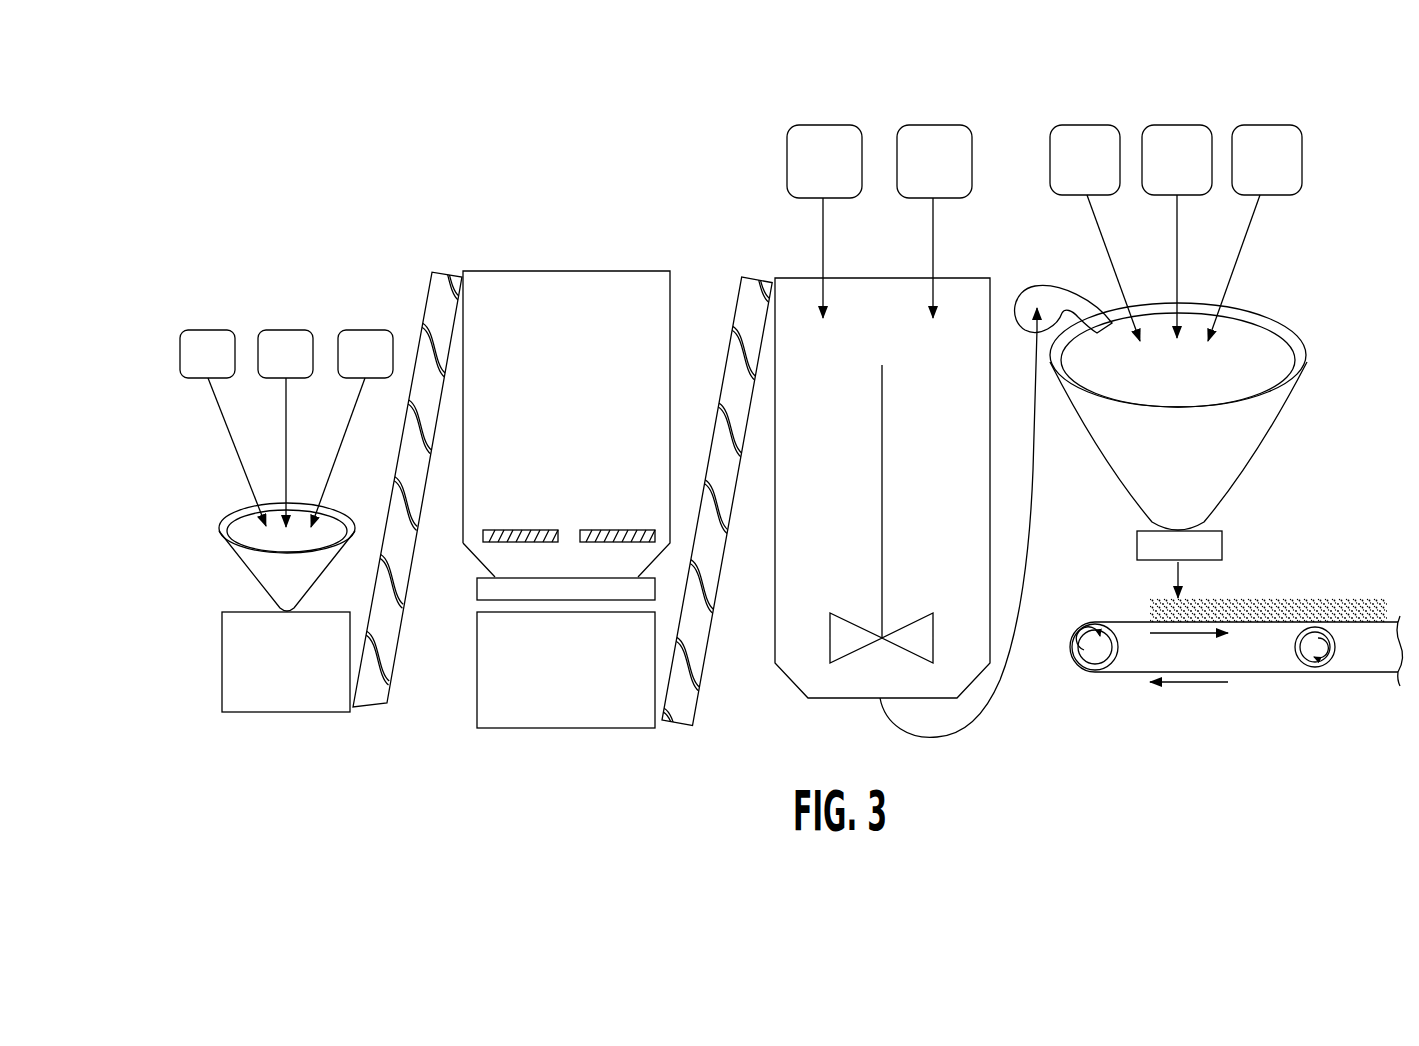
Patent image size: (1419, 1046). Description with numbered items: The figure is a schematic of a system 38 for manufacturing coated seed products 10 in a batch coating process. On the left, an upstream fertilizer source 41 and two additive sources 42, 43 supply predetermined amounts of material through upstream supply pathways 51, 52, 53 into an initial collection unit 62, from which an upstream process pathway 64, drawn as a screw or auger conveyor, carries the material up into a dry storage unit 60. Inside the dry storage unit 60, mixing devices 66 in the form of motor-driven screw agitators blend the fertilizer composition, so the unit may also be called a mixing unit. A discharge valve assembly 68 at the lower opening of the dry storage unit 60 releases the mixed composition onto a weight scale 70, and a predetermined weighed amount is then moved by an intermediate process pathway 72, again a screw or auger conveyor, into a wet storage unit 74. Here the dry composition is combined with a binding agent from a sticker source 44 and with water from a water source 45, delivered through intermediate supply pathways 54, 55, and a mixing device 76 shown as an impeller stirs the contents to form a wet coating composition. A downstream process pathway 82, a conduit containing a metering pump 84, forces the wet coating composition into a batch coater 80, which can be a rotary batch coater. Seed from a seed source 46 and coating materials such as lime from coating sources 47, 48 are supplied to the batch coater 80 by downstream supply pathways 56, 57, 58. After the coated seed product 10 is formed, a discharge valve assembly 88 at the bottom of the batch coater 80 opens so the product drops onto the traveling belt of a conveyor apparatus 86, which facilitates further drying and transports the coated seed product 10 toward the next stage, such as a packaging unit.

The coated seed product 10 is at (1297, 580).
The system 38 is at (347, 146).
The fertilizer source 41 is at (219, 367).
The additive source 42 is at (297, 367).
The additive source 43 is at (377, 367).
The sticker source 44 is at (836, 173).
The water source 45 is at (946, 173).
The seed source 46 is at (1097, 172).
The coating source 47 is at (1189, 172).
The coating source 48 is at (1279, 172).
The upstream supply pathway 51 is at (225, 430).
The upstream supply pathway 52 is at (285, 437).
The upstream supply pathway 53 is at (338, 446).
The intermediate supply pathway 54 is at (823, 257).
The intermediate supply pathway 55 is at (933, 257).
The downstream supply pathway 56 is at (1097, 228).
The downstream supply pathway 57 is at (1177, 262).
The downstream supply pathway 58 is at (1235, 270).
The dry storage unit 60 is at (576, 250).
The collection unit 62 is at (205, 598).
The upstream process pathway 64 is at (414, 286).
The mixing devices 66 is at (598, 528).
The discharge valve assembly 68 is at (477, 590).
The weight scale 70 is at (580, 682).
The intermediate process pathway 72 is at (716, 300).
The wet storage unit 74 is at (790, 692).
The mixing device 76 is at (893, 622).
The batch coater 80 is at (1310, 347).
The downstream process pathway 82 is at (1010, 680).
The metering pump 84 is at (1055, 287).
The conveyor apparatus 86 is at (1107, 615).
The discharge valve assembly 88 is at (1222, 545).